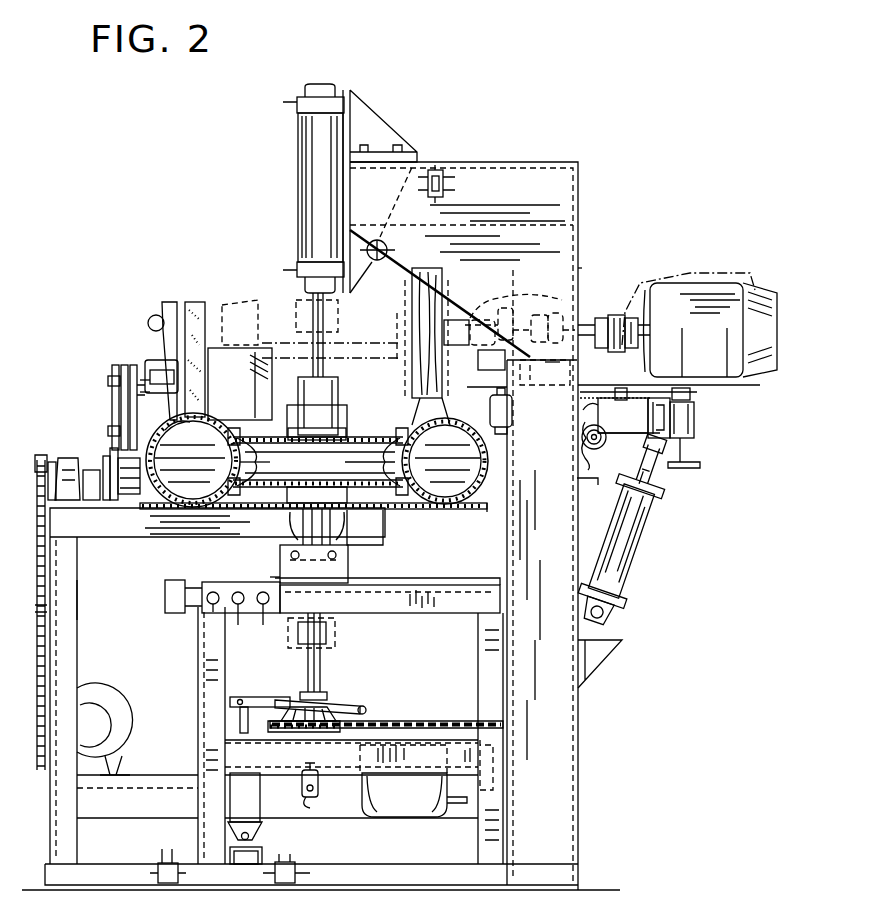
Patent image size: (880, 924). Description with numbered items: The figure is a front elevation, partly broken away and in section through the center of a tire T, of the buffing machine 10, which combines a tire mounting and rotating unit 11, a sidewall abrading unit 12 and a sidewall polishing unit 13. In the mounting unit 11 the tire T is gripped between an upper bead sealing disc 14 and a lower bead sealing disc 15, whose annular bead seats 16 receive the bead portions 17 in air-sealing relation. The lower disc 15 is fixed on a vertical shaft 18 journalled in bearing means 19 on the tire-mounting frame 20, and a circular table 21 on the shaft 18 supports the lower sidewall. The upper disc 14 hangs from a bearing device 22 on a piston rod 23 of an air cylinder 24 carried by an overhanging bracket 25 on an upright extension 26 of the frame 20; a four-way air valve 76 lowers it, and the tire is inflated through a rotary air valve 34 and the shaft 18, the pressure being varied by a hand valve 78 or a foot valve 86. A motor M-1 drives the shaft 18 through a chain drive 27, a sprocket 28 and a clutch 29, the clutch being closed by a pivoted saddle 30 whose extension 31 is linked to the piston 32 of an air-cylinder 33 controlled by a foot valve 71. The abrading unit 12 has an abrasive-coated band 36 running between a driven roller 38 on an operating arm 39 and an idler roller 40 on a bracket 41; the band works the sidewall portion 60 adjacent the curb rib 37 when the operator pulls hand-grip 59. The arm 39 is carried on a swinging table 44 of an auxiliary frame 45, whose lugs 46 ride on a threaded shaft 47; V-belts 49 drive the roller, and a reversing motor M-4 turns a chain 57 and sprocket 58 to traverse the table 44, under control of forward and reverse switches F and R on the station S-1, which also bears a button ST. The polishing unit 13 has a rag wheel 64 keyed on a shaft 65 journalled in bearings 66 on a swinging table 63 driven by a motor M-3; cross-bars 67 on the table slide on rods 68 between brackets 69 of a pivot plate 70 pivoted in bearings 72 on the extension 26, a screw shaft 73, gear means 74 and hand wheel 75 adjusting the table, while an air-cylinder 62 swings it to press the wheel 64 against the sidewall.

The buffing machine 10 is at (569, 160).
The tire mounting and rotating unit 11 is at (270, 571).
The sidewall abrading unit 12 is at (158, 360).
The sidewall polishing unit 13 is at (707, 434).
The upper tire bead sealing disc 14 is at (368, 432).
The lower tire bead sealing disc 15 is at (398, 509).
The annular bead seats 16 is at (370, 464).
The bead portions 17 is at (258, 464).
The vertical shaft 18 is at (296, 541).
The bearing means 19 is at (285, 572).
The tire-mounting frame 20 is at (455, 585).
The circular table 21 is at (486, 510).
The bearing device 22 is at (339, 400).
The piston rod 23 is at (324, 324).
The air cylinder 24 is at (298, 234).
The overhanging bracket 25 is at (370, 262).
The upright extension 26 is at (580, 272).
The chain drive 27 is at (414, 721).
The sprocket 28 is at (283, 700).
The clutch 29 is at (320, 695).
The pivoted saddle 30 is at (302, 706).
The extension 31 is at (240, 697).
The piston 32 is at (240, 721).
The air-cylinder 33 is at (258, 805).
The rotary air valve 34 is at (316, 795).
The abrasive-coated band 36 is at (232, 382).
The curb rib 37 is at (470, 428).
The driven roller 38 is at (240, 319).
The operating arm 39 is at (148, 362).
The idler roller 40 is at (205, 305).
The bracket 41 is at (170, 302).
The swinging table 44 is at (118, 460).
The auxiliary frame 45 is at (78, 602).
The lugs 46 is at (92, 465).
The shaft 47 is at (123, 487).
The V-belts 49 is at (112, 397).
The chain 57 is at (36, 492).
The sprocket 58 is at (60, 458).
The hand-grip 59 is at (148, 374).
The sidewall portion 60 is at (428, 422).
The air-cylinder 62 is at (641, 563).
The swinging table 63 is at (759, 388).
The rag disc or polishing wheel 64 is at (412, 374).
The shaft 65 is at (590, 322).
The bearings 66 is at (527, 310).
The cross-bars 67 is at (624, 368).
The rods 68 is at (621, 415).
The brackets 69 is at (514, 417).
The pivot plate 70 is at (604, 441).
The foot valve 71 is at (170, 883).
The bearings 72 is at (596, 464).
The screw shaft 73 is at (592, 398).
The gear means 74 is at (692, 394).
The hand wheel 75 is at (692, 467).
The four-way air valve 76 is at (437, 170).
The two-way air valve 78 is at (389, 248).
The foot valve 86 is at (305, 882).
The tire T is at (482, 468).
The forward push-button switch F is at (212, 613).
The stop button ST is at (239, 625).
The reverse push-button switch R is at (264, 625).
The start switch S-1 is at (166, 584).
The motor M-1 is at (400, 815).
The motor M-3 is at (692, 292).
The reversing motor M-4 is at (120, 750).